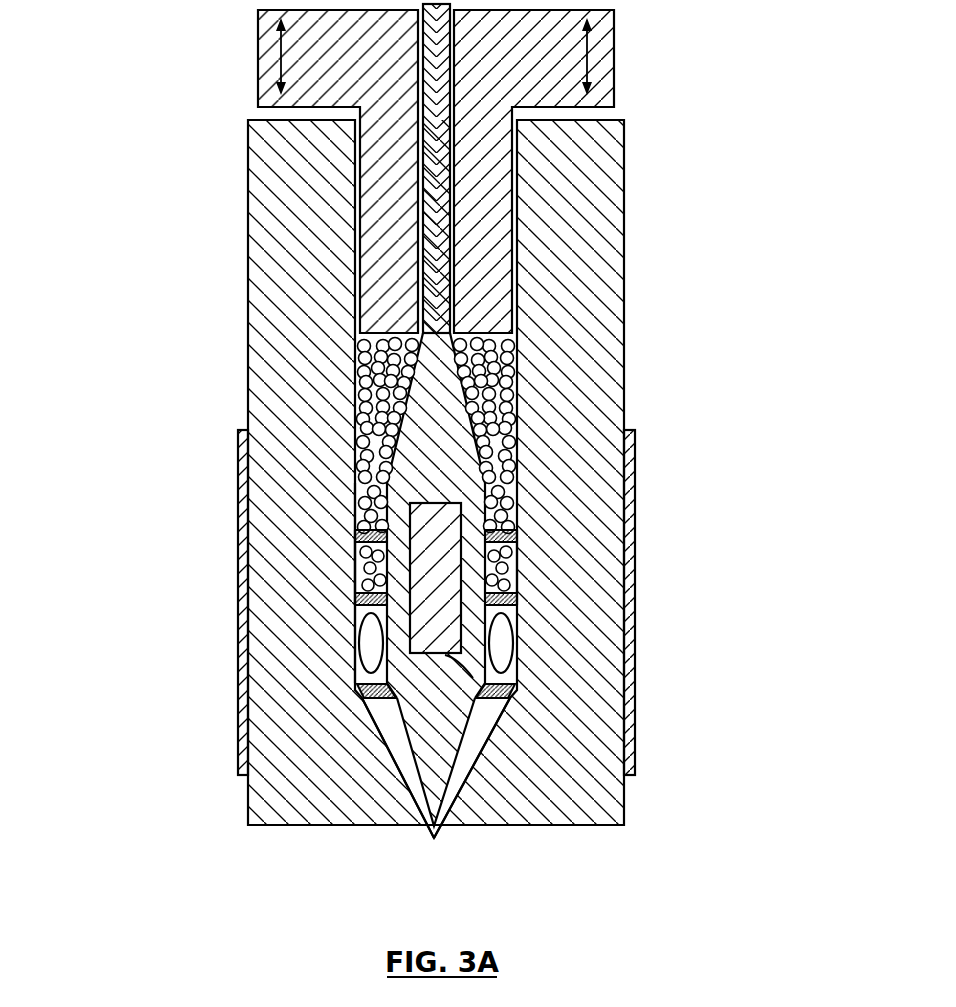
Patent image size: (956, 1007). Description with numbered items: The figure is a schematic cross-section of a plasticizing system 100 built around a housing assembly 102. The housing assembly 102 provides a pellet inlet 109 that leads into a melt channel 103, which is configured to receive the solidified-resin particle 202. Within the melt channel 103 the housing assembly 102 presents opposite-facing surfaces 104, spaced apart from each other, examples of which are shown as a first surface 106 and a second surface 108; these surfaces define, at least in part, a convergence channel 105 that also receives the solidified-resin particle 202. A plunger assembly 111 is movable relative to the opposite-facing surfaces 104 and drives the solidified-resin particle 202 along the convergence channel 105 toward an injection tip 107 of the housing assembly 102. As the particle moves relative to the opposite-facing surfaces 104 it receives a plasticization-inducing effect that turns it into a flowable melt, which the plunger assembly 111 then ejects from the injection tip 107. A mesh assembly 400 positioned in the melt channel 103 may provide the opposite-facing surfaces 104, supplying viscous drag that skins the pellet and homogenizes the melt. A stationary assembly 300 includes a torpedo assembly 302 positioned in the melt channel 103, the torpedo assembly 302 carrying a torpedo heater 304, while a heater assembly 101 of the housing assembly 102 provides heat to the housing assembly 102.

The plasticizing system 100 is at (150, 157).
The heater assembly 101 is at (238, 662).
The housing assembly 102 is at (250, 187).
The melt channel 103 is at (362, 372).
The opposite-facing surfaces 104 is at (160, 543).
The convergence channel 105 is at (357, 522).
The first surface 106 is at (360, 532).
The injection tip 107 is at (436, 826).
The second surface 108 is at (357, 536).
The pellet inlet 109 is at (623, 172).
The plunger assembly 111 is at (617, 48).
The solidified-resin particle 202 is at (375, 383).
The stationary assembly 300 is at (447, 450).
The torpedo assembly 302 is at (397, 488).
The torpedo heater 304 is at (485, 680).
The mesh assembly 400 is at (365, 582).